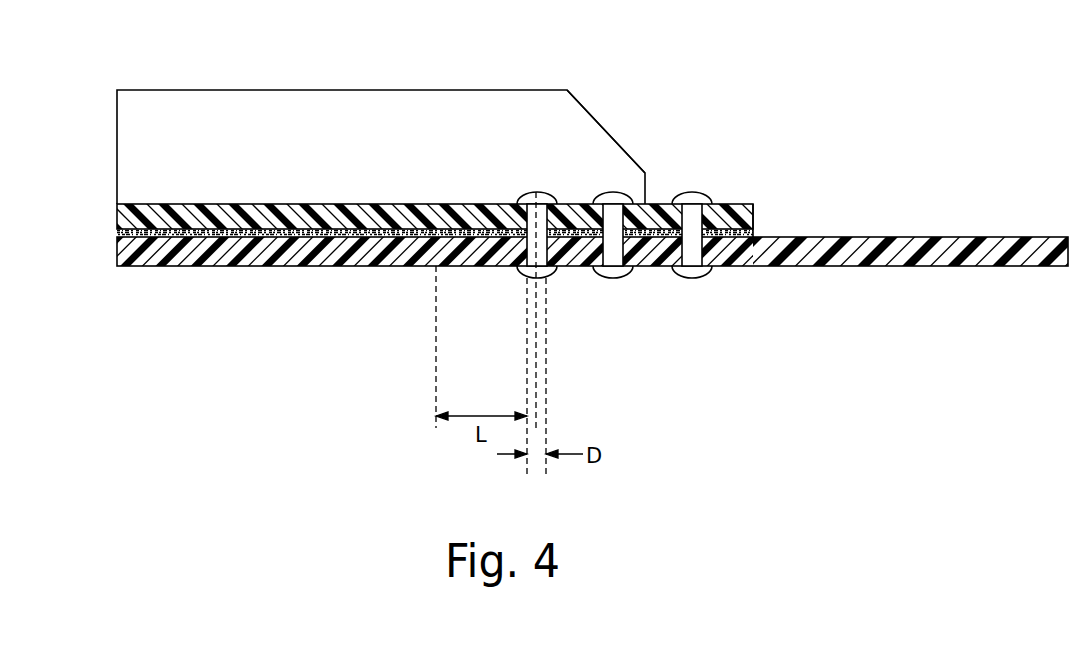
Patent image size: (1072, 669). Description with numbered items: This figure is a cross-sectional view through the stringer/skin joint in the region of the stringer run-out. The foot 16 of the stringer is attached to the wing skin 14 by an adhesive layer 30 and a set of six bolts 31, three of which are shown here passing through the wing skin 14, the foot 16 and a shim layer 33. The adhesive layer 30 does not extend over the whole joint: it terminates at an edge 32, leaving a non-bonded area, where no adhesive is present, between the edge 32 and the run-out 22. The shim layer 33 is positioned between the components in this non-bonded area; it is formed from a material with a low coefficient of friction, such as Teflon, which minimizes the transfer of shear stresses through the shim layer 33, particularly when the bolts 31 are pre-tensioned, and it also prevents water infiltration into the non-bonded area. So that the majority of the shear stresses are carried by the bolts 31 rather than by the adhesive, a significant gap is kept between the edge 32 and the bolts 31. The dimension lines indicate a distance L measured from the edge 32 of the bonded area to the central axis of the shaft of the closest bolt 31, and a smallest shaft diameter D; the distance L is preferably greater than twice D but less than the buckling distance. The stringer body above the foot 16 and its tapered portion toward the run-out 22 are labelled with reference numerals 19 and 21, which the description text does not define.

The wing skin 14 is at (962, 250).
The foot 16 is at (348, 204).
The housing 19 is at (443, 107).
The chamfered edge 21 is at (612, 135).
The run-out 22 is at (755, 210).
The adhesive layer 30 is at (285, 238).
The bolts 31 is at (547, 208).
The edge 32 is at (435, 238).
The shim layer 33 is at (719, 233).